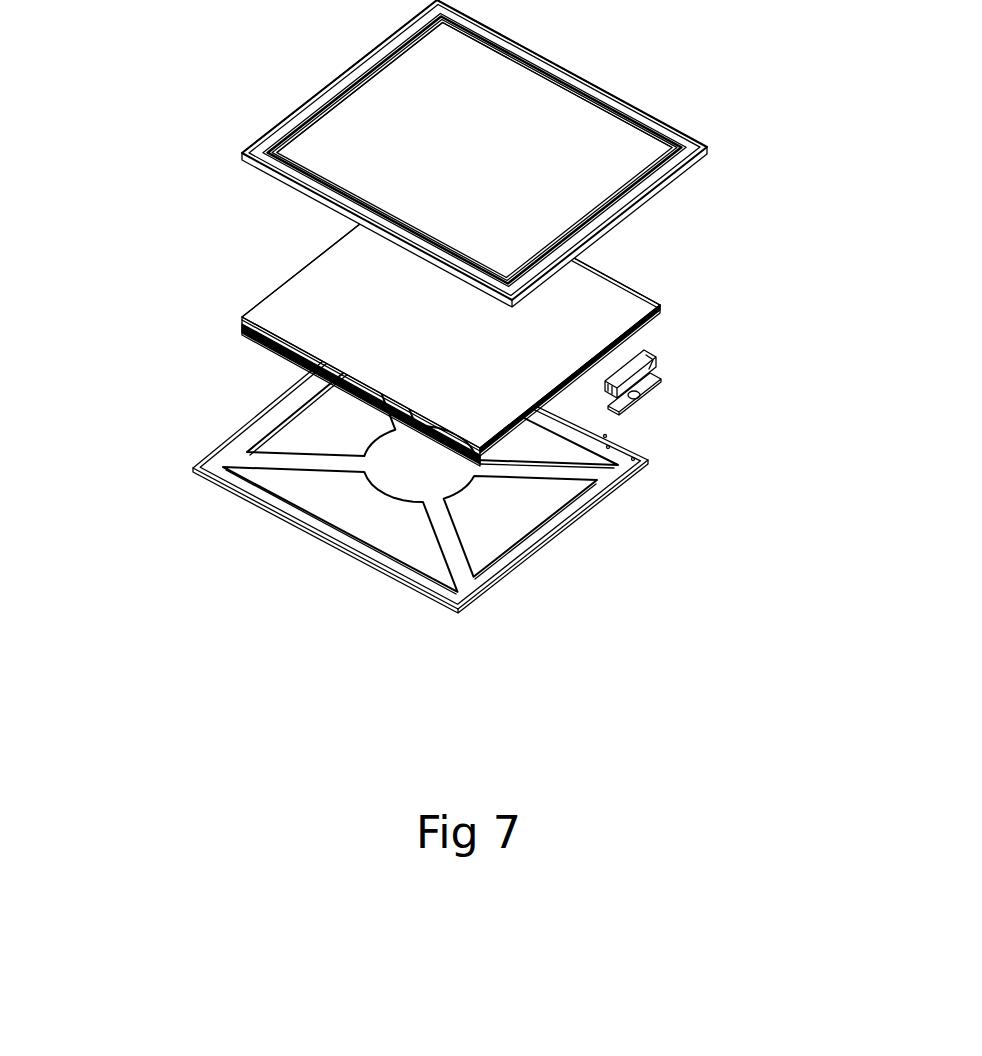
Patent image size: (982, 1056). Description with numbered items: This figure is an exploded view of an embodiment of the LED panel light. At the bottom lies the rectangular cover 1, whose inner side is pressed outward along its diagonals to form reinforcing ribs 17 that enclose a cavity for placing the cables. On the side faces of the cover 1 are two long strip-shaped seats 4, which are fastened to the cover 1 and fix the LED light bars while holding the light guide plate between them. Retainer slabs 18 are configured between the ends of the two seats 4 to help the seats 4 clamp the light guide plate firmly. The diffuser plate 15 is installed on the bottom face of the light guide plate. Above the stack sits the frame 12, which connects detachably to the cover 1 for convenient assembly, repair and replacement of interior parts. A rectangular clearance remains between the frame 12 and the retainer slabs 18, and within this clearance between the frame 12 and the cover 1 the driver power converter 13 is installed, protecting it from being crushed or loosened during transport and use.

The cover 1 is at (345, 510).
The reinforcing ribs 17 is at (305, 455).
The seat 4 is at (290, 348).
The diffuser plate 15 is at (323, 299).
The retainer slabs 18 is at (656, 305).
The frame 12 is at (615, 103).
The driver power converter 13 is at (661, 356).